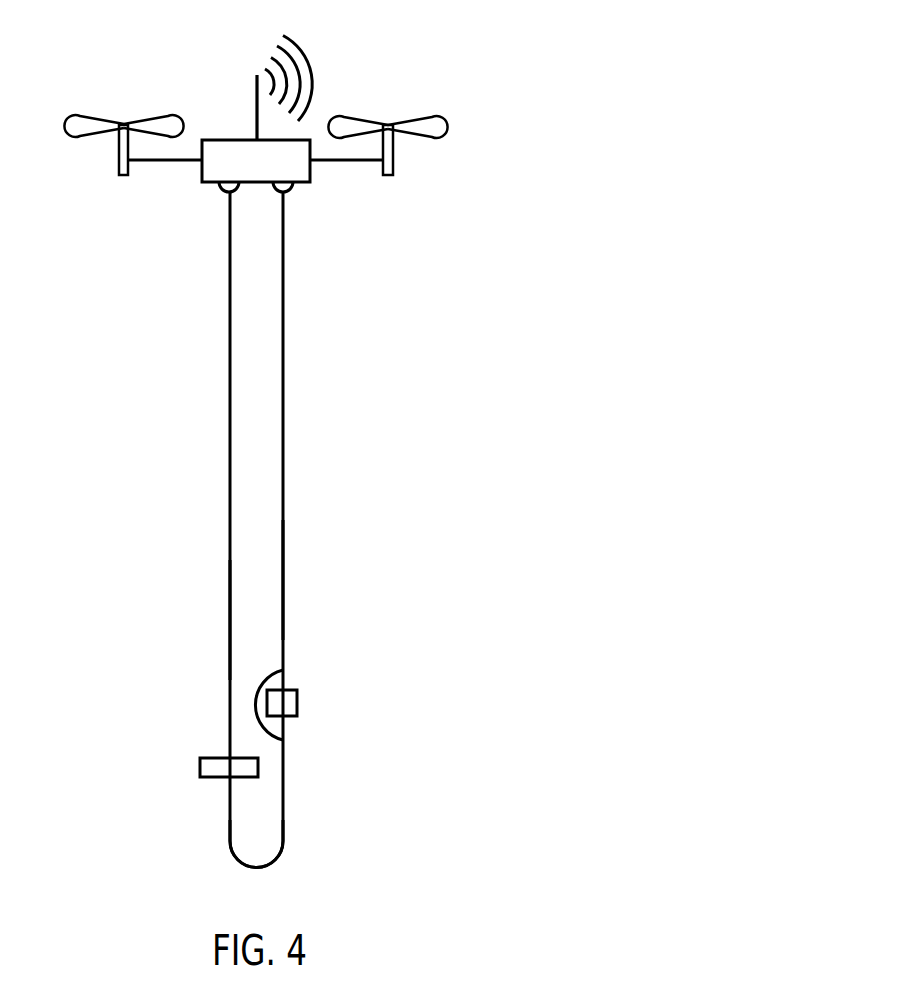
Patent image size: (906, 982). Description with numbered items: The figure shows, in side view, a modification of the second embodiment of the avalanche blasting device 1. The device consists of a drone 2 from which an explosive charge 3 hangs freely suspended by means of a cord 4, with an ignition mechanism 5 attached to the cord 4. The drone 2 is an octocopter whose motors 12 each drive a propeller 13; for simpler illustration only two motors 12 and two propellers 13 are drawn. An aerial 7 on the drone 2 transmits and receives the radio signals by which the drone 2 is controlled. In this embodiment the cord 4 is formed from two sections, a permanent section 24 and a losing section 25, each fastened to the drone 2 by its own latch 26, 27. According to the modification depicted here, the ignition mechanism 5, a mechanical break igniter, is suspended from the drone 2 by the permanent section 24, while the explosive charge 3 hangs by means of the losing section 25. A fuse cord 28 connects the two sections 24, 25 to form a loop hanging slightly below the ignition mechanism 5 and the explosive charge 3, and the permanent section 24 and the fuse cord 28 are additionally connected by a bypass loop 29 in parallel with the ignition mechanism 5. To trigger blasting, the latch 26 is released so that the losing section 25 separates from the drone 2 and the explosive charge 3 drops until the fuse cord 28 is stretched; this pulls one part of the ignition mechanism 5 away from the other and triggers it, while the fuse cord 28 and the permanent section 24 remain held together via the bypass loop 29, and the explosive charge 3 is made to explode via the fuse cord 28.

The avalanche blasting device 1 is at (533, 76).
The drone 2 is at (192, 90).
The explosive charge 3 is at (200, 768).
The cord 4 is at (230, 418).
The ignition mechanism 5 is at (297, 703).
The aerial 7 is at (256, 91).
The motor 12 is at (119, 166).
The propeller 13 is at (423, 118).
The permanent section 24 is at (283, 579).
The losing section 25 is at (230, 620).
The latch 26 is at (220, 193).
The latch 27 is at (292, 191).
The fuse cord 28 is at (230, 820).
The bypass loop 29 is at (280, 665).